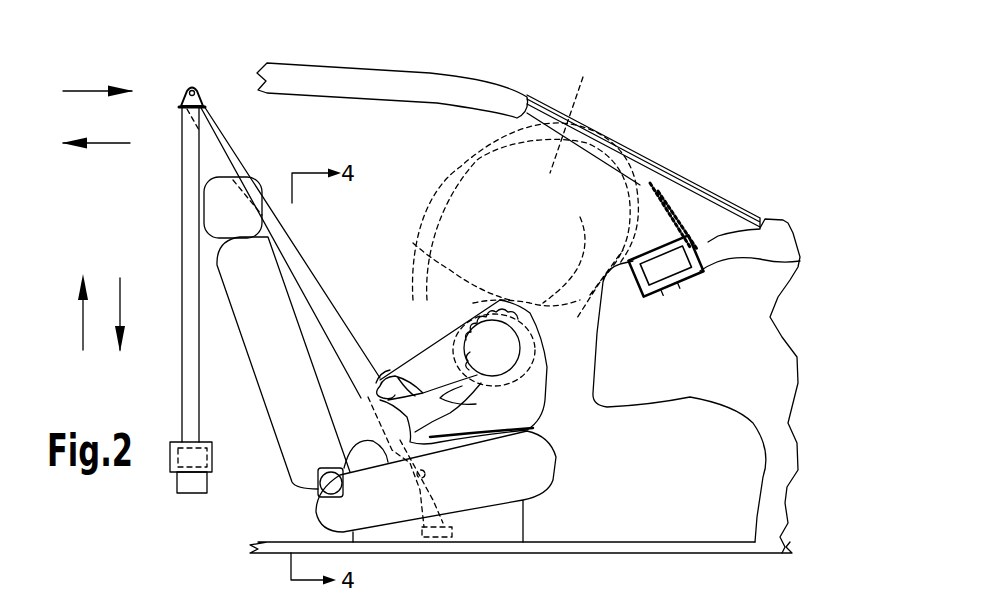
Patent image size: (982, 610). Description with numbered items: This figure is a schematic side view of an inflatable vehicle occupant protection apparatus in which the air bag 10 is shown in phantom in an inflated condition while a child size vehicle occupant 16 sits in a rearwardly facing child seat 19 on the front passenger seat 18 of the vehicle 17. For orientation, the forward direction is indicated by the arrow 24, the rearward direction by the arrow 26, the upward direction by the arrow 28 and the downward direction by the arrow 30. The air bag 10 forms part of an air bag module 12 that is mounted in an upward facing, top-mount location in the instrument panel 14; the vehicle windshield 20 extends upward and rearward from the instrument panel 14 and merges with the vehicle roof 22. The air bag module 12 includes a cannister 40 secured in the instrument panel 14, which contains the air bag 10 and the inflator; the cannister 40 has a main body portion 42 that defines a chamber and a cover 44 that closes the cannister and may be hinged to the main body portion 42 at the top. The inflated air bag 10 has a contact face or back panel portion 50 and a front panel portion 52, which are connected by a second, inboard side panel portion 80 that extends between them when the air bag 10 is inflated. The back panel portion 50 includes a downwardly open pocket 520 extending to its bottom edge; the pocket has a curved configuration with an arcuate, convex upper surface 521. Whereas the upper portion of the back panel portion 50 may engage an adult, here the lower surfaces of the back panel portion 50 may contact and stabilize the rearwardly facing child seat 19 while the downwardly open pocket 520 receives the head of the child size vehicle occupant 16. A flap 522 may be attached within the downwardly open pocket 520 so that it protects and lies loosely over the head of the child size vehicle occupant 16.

The air bag 10 is at (380, 171).
The air bag module 12 is at (730, 288).
The instrument panel 14 is at (768, 370).
The child size vehicle occupant 16 is at (418, 325).
The vehicle 17 is at (812, 482).
The front passenger seat 18 is at (337, 432).
The rearwardly facing child seat 19 is at (527, 407).
The vehicle windshield 20 is at (613, 130).
The vehicle roof 22 is at (436, 72).
The arrow 24 is at (92, 90).
The arrow 26 is at (97, 147).
The arrow 28 is at (81, 308).
The arrow 30 is at (122, 301).
The cannister 40 is at (785, 228).
The main body portion 42 is at (800, 261).
The cover 44 is at (667, 203).
The back panel portion 50 is at (428, 197).
The front panel portion 52 is at (540, 350).
The second, inboard side panel portion 80 is at (576, 109).
The downwardly open pocket 520 is at (447, 290).
The arcuate, convex upper surface 521 is at (550, 297).
The flap 522 is at (477, 300).